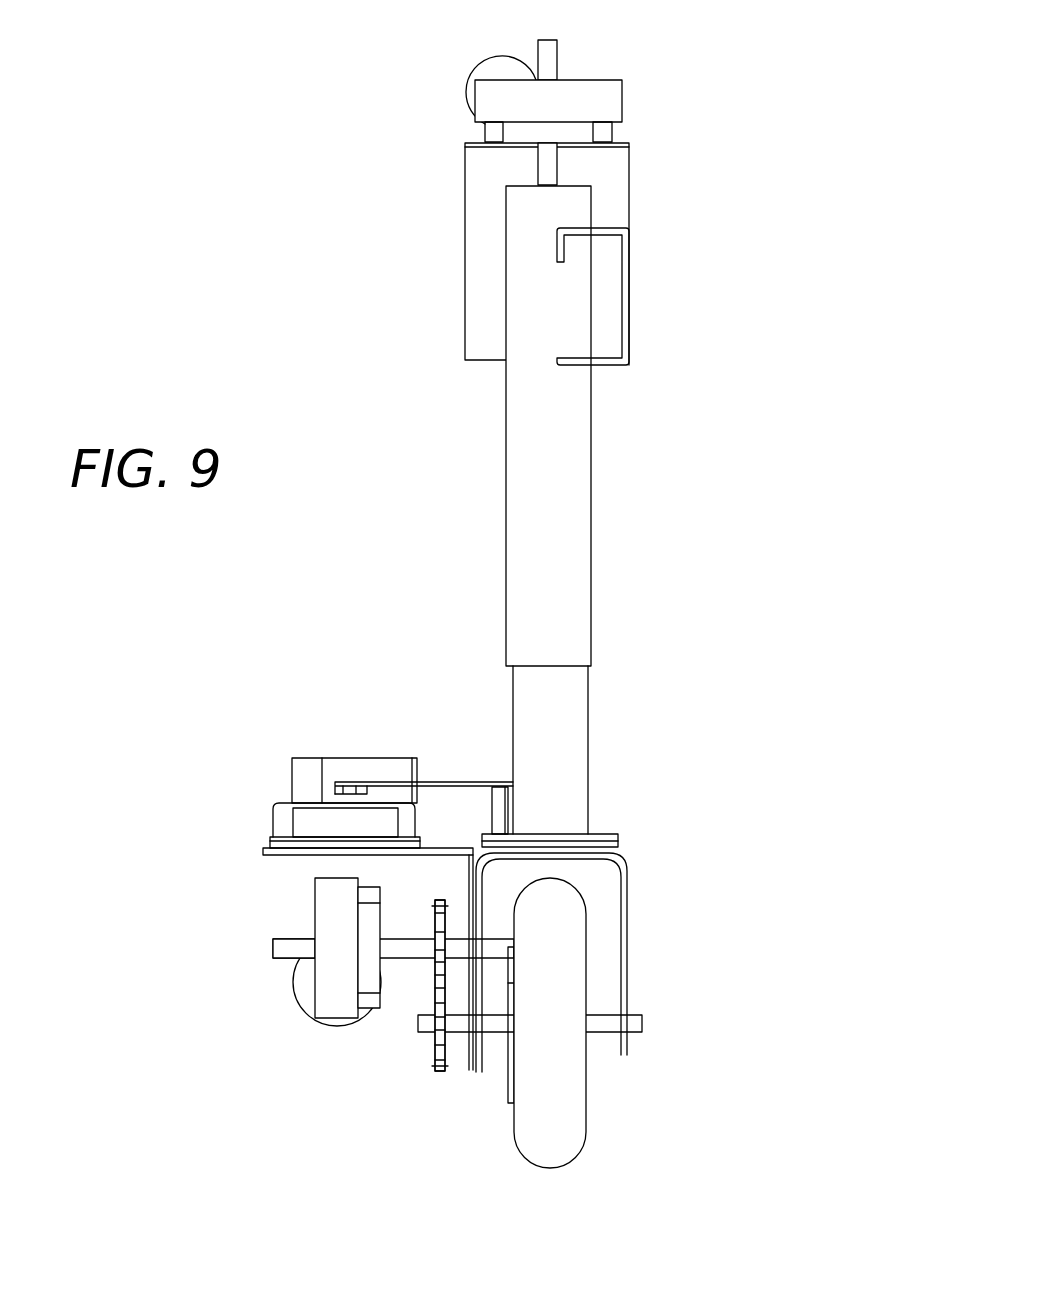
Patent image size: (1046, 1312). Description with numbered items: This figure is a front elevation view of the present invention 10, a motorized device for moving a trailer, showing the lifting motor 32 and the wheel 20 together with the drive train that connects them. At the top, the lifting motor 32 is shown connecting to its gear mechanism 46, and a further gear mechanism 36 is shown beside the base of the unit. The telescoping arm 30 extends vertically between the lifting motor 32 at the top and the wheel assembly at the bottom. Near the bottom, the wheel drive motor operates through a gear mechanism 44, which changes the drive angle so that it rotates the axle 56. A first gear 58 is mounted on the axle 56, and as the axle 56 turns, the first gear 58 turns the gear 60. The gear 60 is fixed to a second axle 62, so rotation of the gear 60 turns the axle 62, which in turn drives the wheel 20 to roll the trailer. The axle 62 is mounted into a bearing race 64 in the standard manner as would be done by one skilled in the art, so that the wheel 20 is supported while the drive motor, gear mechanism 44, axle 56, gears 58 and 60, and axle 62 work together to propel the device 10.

The present invention 10 is at (712, 500).
The wheel 20 is at (568, 1150).
The telescoping arm 30 is at (522, 476).
The lifting motor 32 is at (502, 68).
The gear mechanism 36 is at (392, 767).
The gear mechanism 44 is at (337, 1003).
The gear mechanism 46 is at (613, 103).
The axle 56 is at (407, 937).
The first gear 58 is at (440, 898).
The gear 60 is at (437, 1073).
The axle 62 is at (457, 1030).
The bearing race 64 is at (627, 958).